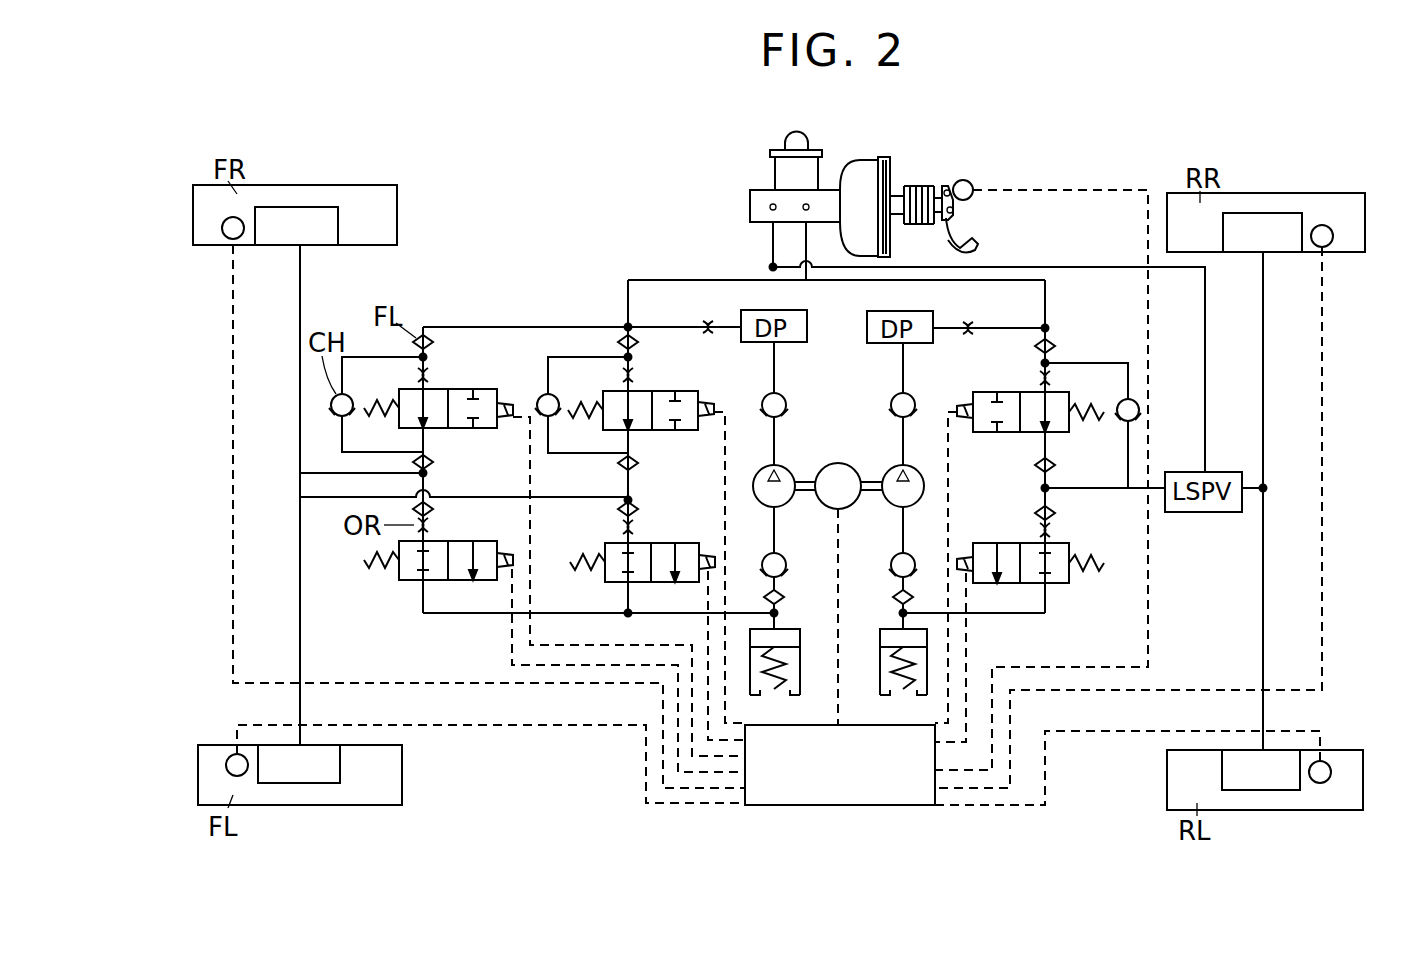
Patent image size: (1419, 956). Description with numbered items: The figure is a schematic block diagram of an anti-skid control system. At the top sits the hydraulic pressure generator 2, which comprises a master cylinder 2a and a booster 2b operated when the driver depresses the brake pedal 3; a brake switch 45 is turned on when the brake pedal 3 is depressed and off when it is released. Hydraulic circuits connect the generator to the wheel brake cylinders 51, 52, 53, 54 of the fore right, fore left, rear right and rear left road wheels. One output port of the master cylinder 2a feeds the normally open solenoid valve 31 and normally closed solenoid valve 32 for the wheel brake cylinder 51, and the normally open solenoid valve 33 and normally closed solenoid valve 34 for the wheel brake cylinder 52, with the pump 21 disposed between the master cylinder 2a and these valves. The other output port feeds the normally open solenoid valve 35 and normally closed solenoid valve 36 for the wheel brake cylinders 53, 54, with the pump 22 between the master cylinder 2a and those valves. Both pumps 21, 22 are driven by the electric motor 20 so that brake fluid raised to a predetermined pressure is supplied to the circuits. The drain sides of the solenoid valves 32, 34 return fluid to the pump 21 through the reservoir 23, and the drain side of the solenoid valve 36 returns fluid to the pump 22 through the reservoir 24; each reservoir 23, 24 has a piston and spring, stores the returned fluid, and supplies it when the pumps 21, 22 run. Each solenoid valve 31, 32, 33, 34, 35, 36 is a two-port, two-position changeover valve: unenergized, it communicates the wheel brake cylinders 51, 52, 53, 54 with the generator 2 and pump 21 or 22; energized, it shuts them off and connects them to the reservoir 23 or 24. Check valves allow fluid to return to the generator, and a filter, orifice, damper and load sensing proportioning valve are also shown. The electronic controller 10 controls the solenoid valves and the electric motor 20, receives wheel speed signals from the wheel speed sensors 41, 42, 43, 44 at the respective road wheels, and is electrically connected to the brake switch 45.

The hydraulic pressure generator 2 is at (815, 191).
The master cylinder 2a is at (750, 216).
The booster 2b is at (868, 168).
The brake pedal 3 is at (973, 232).
The brake switch 45 is at (972, 184).
The electronic controller 10 is at (905, 805).
The electric motor 20 is at (835, 463).
The pump 21 is at (762, 470).
The pump 22 is at (913, 470).
The reservoir 23 is at (798, 629).
The reservoir 24 is at (882, 629).
The solenoid valve 31 is at (453, 389).
The solenoid valve 32 is at (449, 541).
The solenoid valve 33 is at (656, 391).
The solenoid valve 34 is at (653, 543).
The solenoid valve 35 is at (1010, 392).
The solenoid valve 36 is at (1015, 543).
The wheel speed sensor 41 is at (223, 239).
The wheel speed sensor 42 is at (228, 755).
The wheel speed sensor 43 is at (1330, 247).
The wheel speed sensor 44 is at (1330, 762).
The wheel brake cylinder 51 is at (318, 248).
The wheel brake cylinder 52 is at (305, 785).
The wheel brake cylinder 53 is at (1236, 255).
The wheel brake cylinder 54 is at (1262, 790).